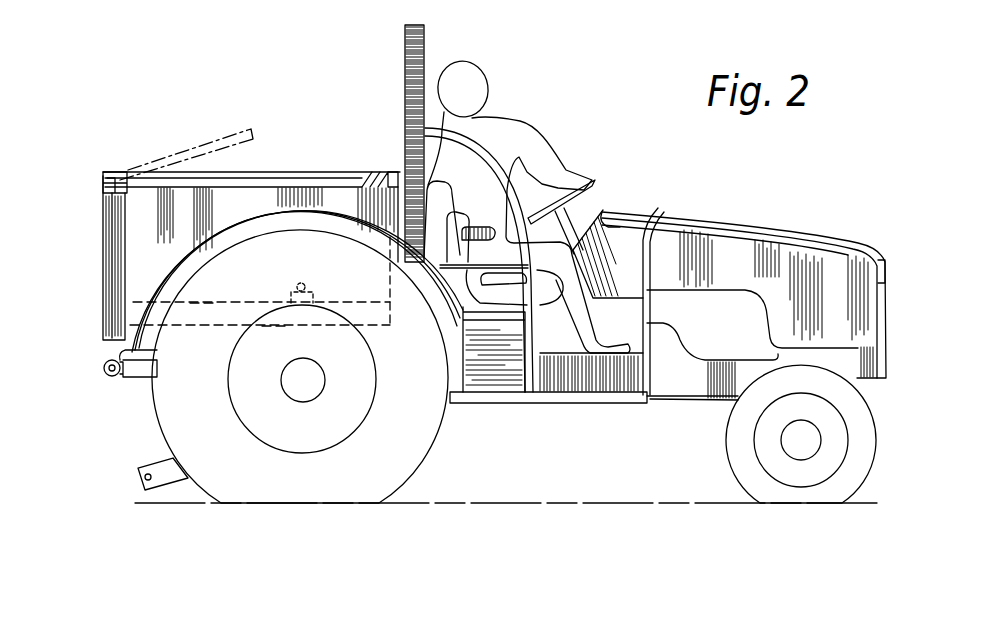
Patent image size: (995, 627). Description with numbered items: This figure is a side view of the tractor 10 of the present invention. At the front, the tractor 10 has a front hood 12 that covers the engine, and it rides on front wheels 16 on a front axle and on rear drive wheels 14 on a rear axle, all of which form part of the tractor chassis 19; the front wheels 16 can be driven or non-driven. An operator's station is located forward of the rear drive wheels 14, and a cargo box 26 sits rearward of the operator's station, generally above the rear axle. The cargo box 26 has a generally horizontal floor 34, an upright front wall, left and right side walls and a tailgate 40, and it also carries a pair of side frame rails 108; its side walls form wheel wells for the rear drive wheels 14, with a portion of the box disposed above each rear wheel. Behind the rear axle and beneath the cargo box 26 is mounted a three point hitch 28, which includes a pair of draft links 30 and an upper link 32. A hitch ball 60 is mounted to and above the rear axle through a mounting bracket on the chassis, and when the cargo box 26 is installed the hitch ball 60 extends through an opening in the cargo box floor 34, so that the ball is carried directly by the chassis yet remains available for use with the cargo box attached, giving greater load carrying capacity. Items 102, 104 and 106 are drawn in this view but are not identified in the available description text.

The tractor 10 is at (683, 208).
The front hood 12 is at (803, 229).
The rear drive wheels 14 is at (426, 460).
The front wheels 16 is at (728, 452).
The tractor chassis 19 is at (678, 400).
The cargo box 26 is at (309, 168).
The three point hitch 28 is at (121, 388).
The draft links 30 is at (162, 462).
The upper link 32 is at (148, 350).
The floor 34 is at (378, 297).
The tailgate 40 is at (178, 152).
The hitch ball 60 is at (297, 283).
The operator 102 is at (530, 130).
The dump frame 104 is at (322, 292).
The actuator 106 is at (203, 302).
The side frame rails 108 is at (275, 307).